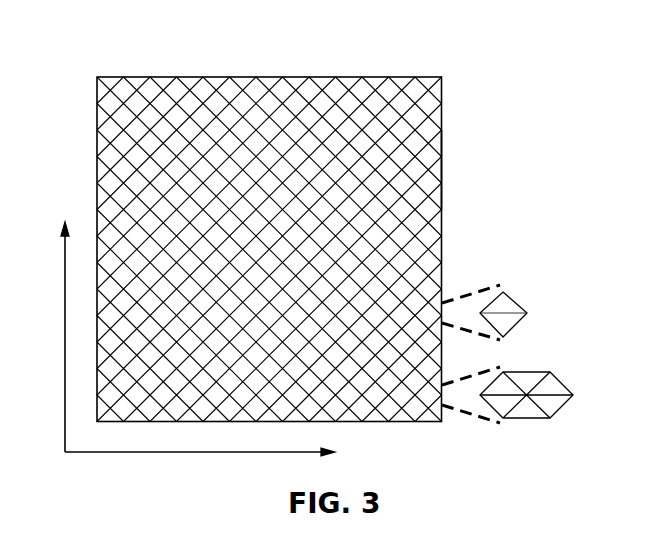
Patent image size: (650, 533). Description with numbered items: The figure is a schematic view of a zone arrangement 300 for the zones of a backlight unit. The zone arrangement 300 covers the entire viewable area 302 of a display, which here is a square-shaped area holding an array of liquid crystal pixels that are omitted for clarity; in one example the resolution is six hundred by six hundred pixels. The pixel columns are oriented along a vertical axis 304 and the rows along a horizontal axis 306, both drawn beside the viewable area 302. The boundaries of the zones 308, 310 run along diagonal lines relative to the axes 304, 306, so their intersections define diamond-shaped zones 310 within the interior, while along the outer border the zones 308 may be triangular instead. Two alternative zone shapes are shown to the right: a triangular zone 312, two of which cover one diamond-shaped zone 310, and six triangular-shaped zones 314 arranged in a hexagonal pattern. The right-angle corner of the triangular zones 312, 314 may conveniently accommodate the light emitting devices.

The zone arrangement 300 is at (303, 218).
The viewable area 302 is at (404, 68).
The vertical axis 304 is at (64, 318).
The horizontal axis 306 is at (173, 452).
The zones 308 is at (455, 145).
The diamond-shaped zones 310 is at (360, 213).
The triangular zone 312 is at (527, 313).
The triangular-shaped zones 314 is at (573, 395).